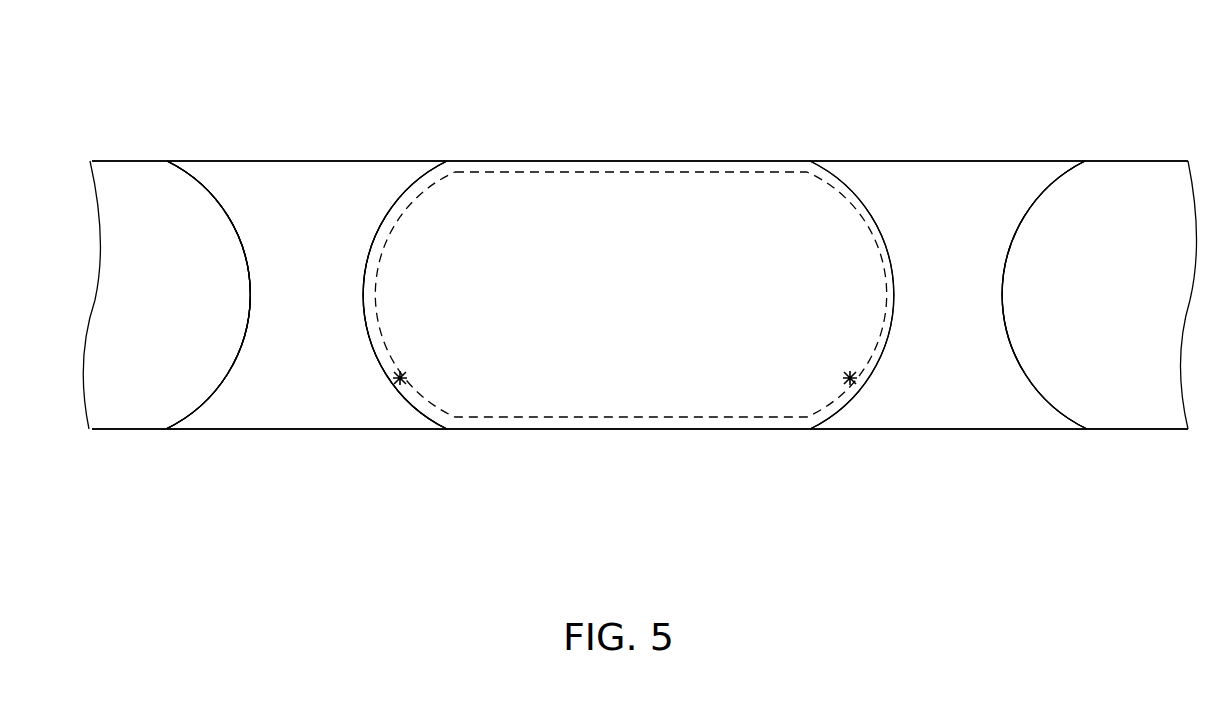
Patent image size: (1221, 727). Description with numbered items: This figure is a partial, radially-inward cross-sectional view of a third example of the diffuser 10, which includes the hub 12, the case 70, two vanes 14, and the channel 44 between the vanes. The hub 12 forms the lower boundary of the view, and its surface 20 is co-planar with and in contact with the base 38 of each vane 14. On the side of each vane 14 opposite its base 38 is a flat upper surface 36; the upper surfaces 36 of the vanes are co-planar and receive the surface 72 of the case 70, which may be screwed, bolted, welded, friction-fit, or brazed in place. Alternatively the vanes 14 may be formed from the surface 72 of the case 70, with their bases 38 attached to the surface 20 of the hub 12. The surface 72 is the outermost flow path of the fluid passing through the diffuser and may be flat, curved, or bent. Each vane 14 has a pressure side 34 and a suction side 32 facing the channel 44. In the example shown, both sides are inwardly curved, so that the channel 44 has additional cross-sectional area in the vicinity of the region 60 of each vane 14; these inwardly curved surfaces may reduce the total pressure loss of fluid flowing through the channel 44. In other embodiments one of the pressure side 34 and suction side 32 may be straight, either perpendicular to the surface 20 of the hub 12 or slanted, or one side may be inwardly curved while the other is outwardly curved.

The diffuser 10 is at (405, 512).
The hub 12 is at (645, 540).
The vane 14 is at (298, 114).
The surface of the hub 20 is at (136, 429).
The suction side 32 is at (363, 295).
The pressure side 34 is at (250, 295).
The upper surface 36 is at (380, 161).
The base 38 is at (305, 430).
The channel 44 is at (645, 310).
The region 60 is at (400, 378).
The case 70 is at (645, 138).
The surface of the case 72 is at (720, 161).